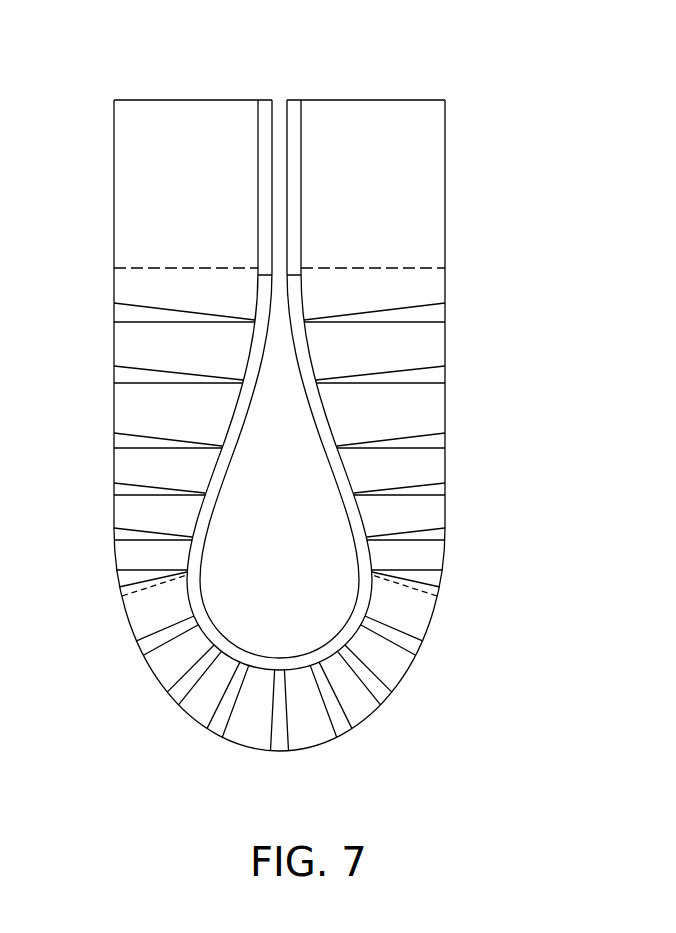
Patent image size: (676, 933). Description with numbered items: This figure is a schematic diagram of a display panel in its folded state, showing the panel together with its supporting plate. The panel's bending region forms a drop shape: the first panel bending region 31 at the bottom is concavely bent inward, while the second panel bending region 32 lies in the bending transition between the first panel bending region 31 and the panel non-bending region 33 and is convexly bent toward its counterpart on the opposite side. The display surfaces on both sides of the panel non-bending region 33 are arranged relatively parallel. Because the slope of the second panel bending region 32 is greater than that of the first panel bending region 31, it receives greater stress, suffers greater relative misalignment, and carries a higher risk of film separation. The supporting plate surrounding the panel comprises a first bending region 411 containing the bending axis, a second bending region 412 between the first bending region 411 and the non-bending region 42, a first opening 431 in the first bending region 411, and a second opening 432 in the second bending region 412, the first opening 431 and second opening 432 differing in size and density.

The first panel bending region 31 is at (260, 660).
The second panel bending region 32 is at (200, 512).
The panel non-bending region 33 is at (292, 100).
The non-bending region 42 is at (430, 177).
The first bending region 411 is at (422, 618).
The second bending region 412 is at (430, 352).
The first opening 431 is at (385, 698).
The second opening 432 is at (440, 443).